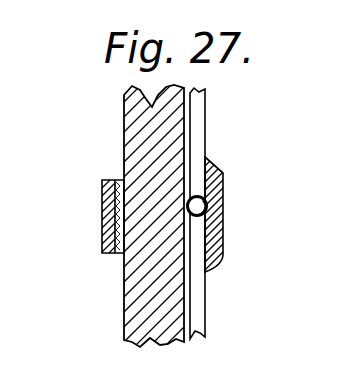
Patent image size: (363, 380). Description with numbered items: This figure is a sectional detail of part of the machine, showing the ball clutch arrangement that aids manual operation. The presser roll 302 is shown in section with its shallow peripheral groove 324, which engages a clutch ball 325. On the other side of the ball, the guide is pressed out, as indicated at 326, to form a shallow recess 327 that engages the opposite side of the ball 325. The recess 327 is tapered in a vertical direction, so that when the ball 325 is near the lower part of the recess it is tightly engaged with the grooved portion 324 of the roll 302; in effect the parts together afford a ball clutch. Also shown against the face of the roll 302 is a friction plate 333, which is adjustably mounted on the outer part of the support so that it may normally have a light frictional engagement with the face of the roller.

The presser roll 302 is at (127, 149).
The friction plate 333 is at (115, 199).
The shallow peripheral groove 324 is at (191, 323).
The clutch ball 325 is at (208, 207).
The pressed-out portion 326 is at (214, 242).
The shallow recess 327 is at (212, 163).